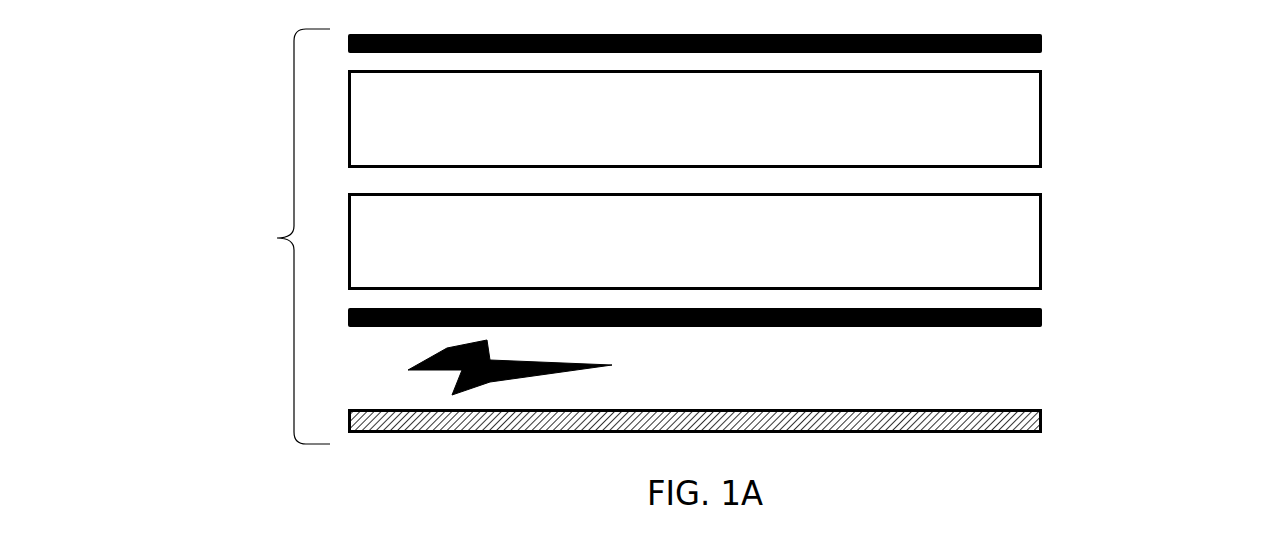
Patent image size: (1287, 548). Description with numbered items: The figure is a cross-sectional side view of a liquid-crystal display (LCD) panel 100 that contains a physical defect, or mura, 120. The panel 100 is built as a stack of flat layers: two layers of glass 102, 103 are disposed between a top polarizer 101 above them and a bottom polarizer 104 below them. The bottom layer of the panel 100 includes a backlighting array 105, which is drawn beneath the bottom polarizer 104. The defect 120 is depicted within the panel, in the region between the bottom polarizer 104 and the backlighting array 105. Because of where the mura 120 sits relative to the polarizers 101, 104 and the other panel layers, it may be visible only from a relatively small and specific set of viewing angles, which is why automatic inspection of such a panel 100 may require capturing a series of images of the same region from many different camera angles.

The liquid-crystal display (LCD) panel 100 is at (266, 236).
The top polarizer 101 is at (1042, 43).
The layer of glass 102 is at (1042, 118).
The layer of glass 103 is at (1042, 242).
The bottom polarizer 104 is at (1042, 316).
The backlighting array 105 is at (1042, 420).
The defect (mura) 120 is at (615, 366).